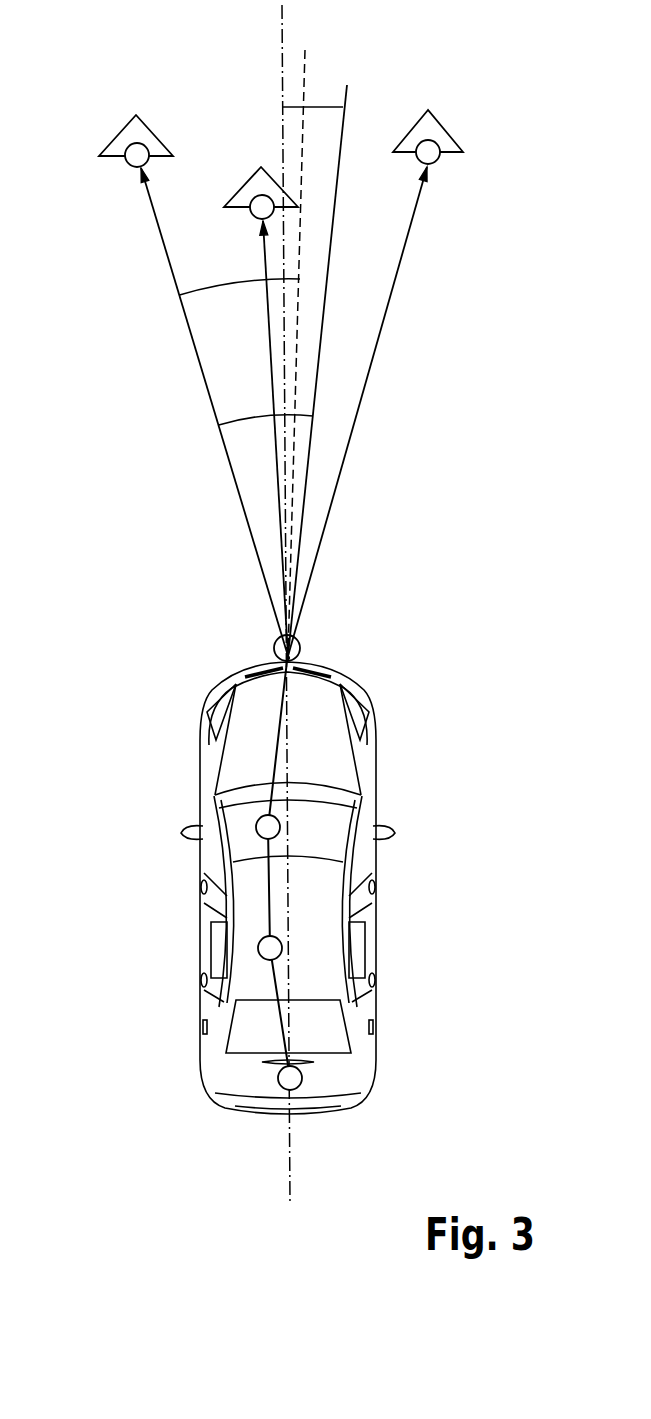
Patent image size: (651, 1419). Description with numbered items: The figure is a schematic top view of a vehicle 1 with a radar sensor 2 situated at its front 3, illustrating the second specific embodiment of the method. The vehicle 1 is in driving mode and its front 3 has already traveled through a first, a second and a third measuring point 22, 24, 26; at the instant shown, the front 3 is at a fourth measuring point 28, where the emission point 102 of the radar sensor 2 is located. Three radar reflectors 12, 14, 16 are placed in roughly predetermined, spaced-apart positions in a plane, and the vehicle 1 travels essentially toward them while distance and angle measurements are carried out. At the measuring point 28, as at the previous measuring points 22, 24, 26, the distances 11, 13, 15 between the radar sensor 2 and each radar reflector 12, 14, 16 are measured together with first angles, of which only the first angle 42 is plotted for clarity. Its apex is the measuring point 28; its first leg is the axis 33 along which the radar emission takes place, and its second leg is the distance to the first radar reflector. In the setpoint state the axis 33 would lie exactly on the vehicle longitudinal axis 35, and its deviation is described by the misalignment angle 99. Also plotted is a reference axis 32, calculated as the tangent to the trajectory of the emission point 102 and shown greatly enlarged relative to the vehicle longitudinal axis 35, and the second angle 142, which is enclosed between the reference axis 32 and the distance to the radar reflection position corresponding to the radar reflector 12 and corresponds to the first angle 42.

The vehicle 1 is at (356, 718).
The radar sensor 2 is at (274, 835).
The front 3 is at (274, 835).
The distance 11 is at (182, 313).
The radar reflector 12 is at (112, 135).
The distance 13 is at (258, 246).
The radar reflector 14 is at (247, 176).
The distance 15 is at (400, 262).
The radar reflector 16 is at (447, 128).
The first measuring point 22 is at (281, 1090).
The second measuring point 24 is at (258, 948).
The third measuring point 26 is at (256, 827).
The fourth measuring point 28 is at (274, 645).
The reference axis 32 is at (307, 57).
The axis 33 is at (340, 165).
The vehicle longitudinal axis 35 is at (280, 23).
The first angle 42 is at (207, 420).
The misalignment angle 99 is at (315, 106).
The emission point 102 is at (240, 650).
The second angle 142 is at (166, 272).